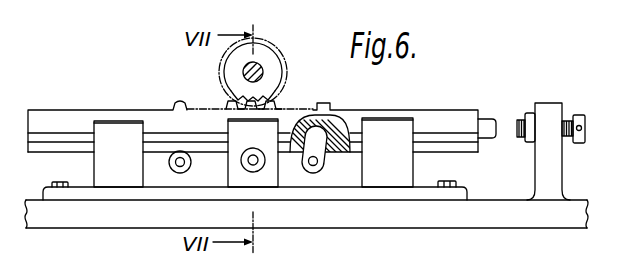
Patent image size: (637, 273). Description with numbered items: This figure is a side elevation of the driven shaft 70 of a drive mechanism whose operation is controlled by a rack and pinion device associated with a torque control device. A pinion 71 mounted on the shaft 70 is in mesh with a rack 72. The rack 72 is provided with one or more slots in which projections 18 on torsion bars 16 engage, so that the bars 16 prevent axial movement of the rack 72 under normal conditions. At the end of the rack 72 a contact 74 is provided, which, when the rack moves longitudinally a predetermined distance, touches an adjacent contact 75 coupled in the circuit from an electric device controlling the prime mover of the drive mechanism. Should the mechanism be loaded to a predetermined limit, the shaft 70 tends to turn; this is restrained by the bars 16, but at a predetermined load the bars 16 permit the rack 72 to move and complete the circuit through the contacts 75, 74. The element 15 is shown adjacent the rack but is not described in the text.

The pawl 15 is at (318, 125).
The torsion bars 16 is at (250, 158).
The projections 18 is at (175, 158).
The shaft 70 is at (263, 72).
The pinion 71 is at (275, 52).
The rack 72 is at (437, 120).
The contact 74 is at (483, 128).
The contact 75 is at (520, 120).